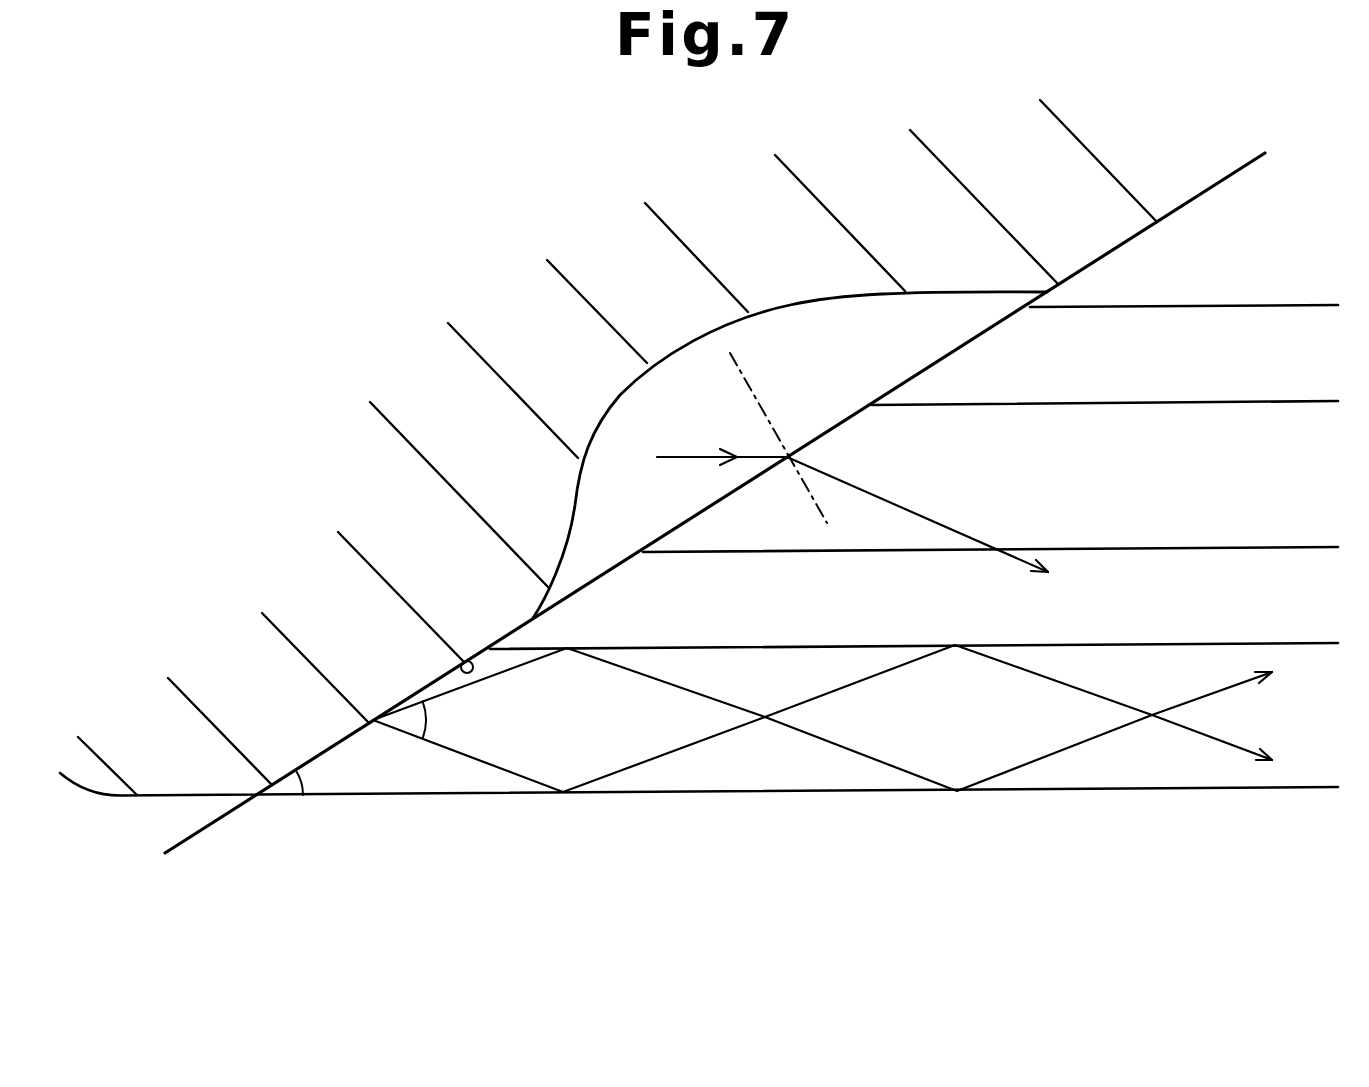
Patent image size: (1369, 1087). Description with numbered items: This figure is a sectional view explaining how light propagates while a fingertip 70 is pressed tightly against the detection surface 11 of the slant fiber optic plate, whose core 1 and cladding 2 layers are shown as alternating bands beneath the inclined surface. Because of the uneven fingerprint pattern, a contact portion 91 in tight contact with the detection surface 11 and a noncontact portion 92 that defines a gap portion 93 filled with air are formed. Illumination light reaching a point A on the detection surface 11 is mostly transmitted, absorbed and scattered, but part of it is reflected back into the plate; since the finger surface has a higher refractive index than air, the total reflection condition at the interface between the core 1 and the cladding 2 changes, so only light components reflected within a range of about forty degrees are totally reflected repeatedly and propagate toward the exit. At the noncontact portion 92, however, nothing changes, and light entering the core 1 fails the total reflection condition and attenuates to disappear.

The core 1 is at (1216, 272).
The cladding 2 is at (1305, 322).
The detection surface 11 is at (1256, 158).
The fingertip 70 is at (520, 278).
The contact portion 91 is at (468, 661).
The noncontact portion 92 is at (850, 418).
The gap portion 93 is at (700, 415).
The point A is at (373, 718).